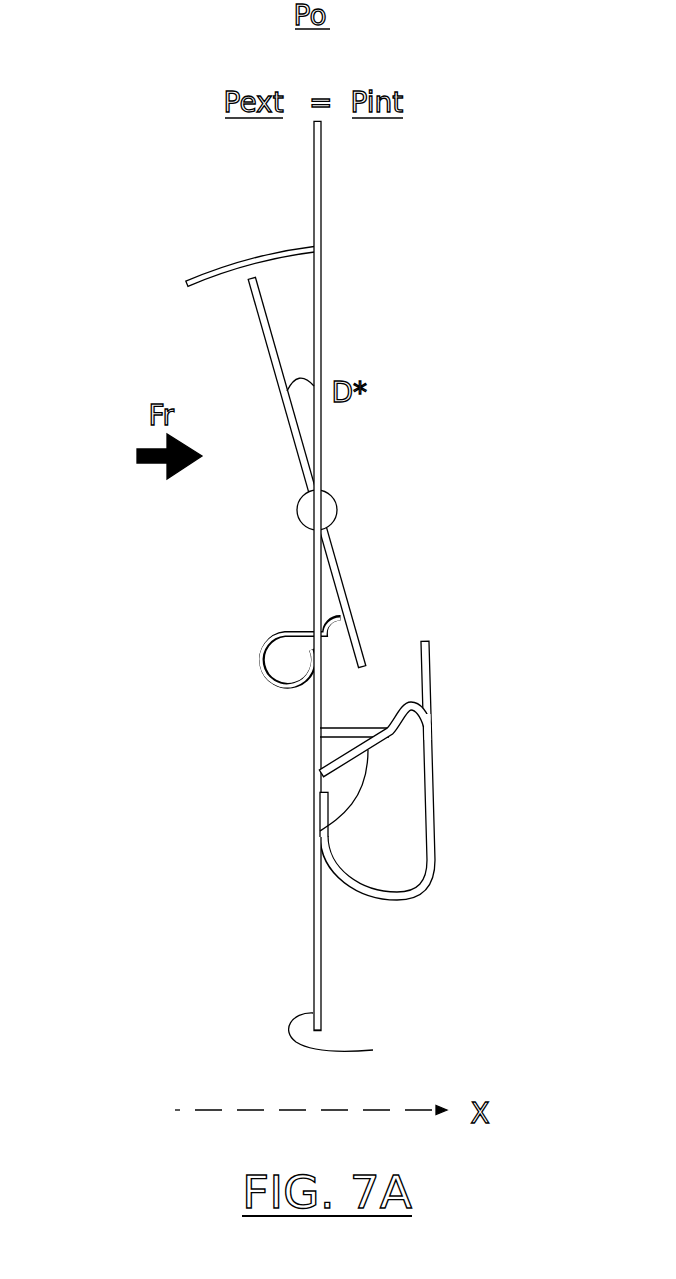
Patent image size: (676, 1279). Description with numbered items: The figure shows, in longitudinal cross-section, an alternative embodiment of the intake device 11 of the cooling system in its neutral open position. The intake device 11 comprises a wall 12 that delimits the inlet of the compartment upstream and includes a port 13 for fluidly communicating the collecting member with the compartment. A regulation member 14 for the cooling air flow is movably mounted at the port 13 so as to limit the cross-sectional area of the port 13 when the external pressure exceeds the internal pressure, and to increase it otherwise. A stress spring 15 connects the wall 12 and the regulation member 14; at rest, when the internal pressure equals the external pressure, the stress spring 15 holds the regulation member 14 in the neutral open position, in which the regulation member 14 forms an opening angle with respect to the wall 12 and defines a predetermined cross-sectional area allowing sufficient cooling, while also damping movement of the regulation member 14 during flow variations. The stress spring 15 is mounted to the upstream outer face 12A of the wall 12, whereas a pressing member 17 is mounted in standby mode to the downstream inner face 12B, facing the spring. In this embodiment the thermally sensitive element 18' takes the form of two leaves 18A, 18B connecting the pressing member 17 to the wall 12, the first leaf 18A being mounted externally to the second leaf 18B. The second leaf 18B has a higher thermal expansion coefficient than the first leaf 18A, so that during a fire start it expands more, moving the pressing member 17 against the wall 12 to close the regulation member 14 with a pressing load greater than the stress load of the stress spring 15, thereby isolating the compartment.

The intake device 11 is at (137, 158).
The wall 12 is at (408, 1026).
The upstream outer face 12A is at (370, 1041).
The downstream inner face 12B is at (320, 1001).
The port 13 is at (350, 308).
The regulation member 14 is at (347, 558).
The stress spring 15 is at (261, 657).
The pressing member 17 is at (435, 758).
The thermally sensitive element 18' is at (295, 779).
The first leaf 18A is at (335, 741).
The second leaf 18B is at (319, 830).